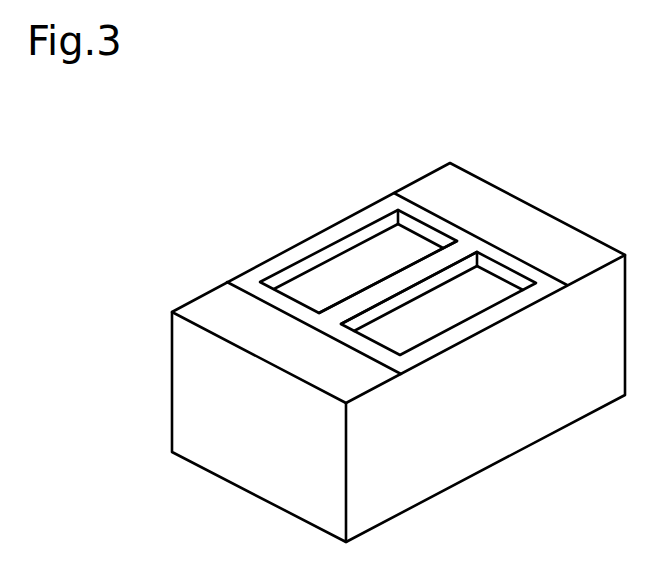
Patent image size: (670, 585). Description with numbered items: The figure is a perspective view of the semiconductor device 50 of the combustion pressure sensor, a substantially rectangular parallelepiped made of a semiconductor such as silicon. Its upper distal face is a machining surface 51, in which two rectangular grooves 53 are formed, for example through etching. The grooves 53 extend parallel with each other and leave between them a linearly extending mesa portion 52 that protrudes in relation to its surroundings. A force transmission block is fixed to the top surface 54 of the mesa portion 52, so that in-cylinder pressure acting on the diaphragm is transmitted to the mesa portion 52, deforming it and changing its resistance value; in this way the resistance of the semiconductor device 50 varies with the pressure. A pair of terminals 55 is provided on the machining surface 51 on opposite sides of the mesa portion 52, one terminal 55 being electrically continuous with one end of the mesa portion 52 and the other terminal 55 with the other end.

The semiconductor device 50 is at (398, 322).
The machining surface 51 is at (247, 280).
The mesa portion 52 is at (368, 298).
The rectangular grooves 53 is at (371, 232).
The top surface 54 is at (407, 278).
The terminals 55 is at (213, 298).